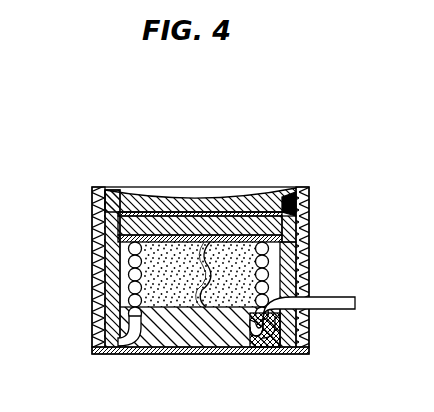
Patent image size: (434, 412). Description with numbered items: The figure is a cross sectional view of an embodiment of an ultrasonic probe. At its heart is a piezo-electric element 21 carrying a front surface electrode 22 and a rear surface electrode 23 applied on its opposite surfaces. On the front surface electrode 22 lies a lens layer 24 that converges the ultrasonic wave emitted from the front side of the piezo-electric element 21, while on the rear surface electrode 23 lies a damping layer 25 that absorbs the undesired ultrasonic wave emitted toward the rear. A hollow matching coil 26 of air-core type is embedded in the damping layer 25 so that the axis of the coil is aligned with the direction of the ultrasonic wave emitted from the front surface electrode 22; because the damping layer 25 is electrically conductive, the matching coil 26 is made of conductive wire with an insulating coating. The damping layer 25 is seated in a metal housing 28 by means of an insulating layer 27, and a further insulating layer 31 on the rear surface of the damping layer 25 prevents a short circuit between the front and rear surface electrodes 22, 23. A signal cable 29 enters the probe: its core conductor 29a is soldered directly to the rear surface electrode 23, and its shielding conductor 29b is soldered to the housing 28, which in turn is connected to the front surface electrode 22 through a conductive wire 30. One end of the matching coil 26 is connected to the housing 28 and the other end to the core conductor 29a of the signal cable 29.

The piezo-electric element 21 is at (183, 227).
The front surface electrode 22 is at (242, 205).
The rear surface electrode 23 is at (125, 243).
The lens layer 24 is at (135, 202).
The damping layer 25 is at (170, 295).
The matching coil 26 is at (283, 265).
The insulating layer 27 is at (113, 302).
The housing 28 is at (92, 290).
The signal cable 29 is at (341, 296).
The core conductor 29a is at (258, 339).
The shielding conductor 29b is at (283, 346).
The conductive wire 30 is at (280, 199).
The insulating layer 31 is at (184, 337).